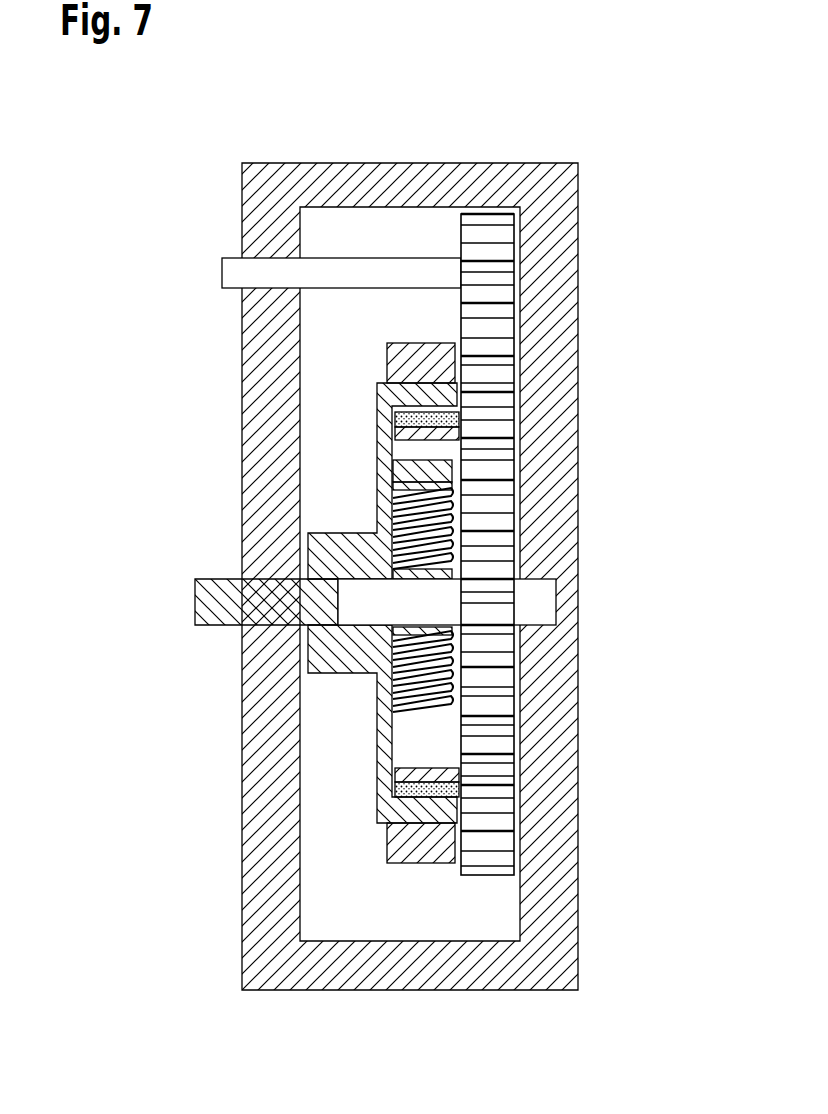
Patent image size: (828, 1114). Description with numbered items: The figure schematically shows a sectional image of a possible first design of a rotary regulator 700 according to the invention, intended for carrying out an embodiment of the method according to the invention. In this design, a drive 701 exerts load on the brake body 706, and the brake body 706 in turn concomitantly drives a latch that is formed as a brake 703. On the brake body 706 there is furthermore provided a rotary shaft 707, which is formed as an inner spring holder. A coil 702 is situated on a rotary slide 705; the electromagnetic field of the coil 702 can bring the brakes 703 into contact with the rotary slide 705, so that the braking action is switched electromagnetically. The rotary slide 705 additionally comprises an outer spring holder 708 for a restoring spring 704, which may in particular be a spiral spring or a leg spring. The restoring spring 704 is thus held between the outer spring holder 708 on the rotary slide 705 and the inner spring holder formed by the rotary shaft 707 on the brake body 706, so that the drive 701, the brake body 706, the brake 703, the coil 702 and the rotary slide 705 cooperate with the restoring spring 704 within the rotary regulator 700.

The rotary regulator 700 is at (313, 104).
The drive 701 is at (499, 220).
The coil 702 is at (387, 363).
The brake 703 is at (455, 420).
The restoring spring 704 is at (440, 512).
The rotary slide 705 is at (215, 605).
The brake body 706 is at (548, 605).
The rotary shaft 707 is at (430, 626).
The outer spring holder 708 is at (445, 479).